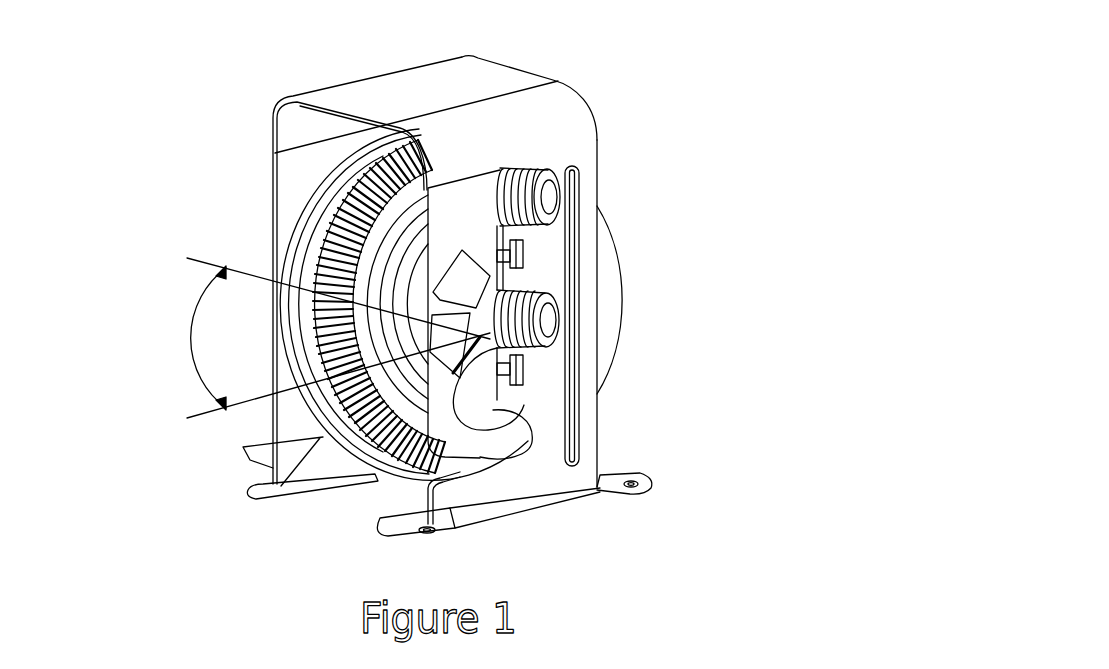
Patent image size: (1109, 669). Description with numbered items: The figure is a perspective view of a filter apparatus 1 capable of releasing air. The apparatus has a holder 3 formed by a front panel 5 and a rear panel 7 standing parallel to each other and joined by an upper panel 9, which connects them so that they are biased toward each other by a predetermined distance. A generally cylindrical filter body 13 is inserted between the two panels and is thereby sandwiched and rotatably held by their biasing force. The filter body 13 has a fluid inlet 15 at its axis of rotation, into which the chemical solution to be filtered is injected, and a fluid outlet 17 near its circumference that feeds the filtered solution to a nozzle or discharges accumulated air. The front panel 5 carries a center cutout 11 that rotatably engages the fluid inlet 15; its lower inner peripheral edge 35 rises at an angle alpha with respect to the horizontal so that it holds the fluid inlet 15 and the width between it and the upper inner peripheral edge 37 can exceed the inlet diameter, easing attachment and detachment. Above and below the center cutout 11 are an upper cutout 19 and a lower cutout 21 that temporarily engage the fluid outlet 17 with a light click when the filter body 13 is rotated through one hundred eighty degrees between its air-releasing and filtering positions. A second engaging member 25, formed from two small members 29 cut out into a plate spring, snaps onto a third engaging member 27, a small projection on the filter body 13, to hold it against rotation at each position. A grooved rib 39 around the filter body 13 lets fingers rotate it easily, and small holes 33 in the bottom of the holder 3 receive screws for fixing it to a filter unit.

The filter apparatus 1 is at (764, 93).
The holder 3 is at (529, 65).
The front panel 5 is at (598, 427).
The rear panel 7 is at (307, 165).
The upper panel 9 is at (453, 90).
The center cutout 11 is at (548, 283).
The filter body 13 is at (622, 294).
The fluid inlet 15 is at (548, 328).
The fluid outlet 17 is at (555, 197).
The upper cutout 19 is at (517, 177).
The lower cutout 21 is at (525, 462).
The second engaging member 25 is at (538, 371).
The third engaging member 27 is at (527, 250).
The small members 29 is at (457, 205).
The small holes 33 is at (630, 483).
The lower inner peripheral edge 35 is at (492, 403).
The upper inner peripheral edge 37 is at (530, 272).
The rib 39 is at (373, 480).